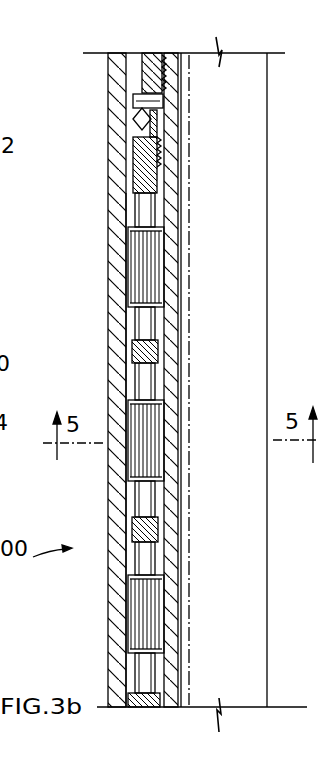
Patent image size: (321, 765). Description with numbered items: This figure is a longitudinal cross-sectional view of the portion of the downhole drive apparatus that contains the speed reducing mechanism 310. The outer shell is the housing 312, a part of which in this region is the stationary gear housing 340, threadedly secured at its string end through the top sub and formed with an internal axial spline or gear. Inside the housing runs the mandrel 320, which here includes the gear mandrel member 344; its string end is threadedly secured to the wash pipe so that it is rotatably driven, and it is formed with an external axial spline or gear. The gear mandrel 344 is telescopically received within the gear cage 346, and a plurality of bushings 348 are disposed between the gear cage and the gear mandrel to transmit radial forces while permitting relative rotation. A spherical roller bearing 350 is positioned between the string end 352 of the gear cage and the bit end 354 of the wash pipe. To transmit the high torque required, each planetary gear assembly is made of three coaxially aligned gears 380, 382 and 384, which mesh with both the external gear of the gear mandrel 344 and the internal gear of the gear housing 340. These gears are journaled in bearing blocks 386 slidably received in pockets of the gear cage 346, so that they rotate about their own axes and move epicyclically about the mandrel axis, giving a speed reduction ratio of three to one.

The speed reducing mechanism 310 is at (100, 300).
The housing 312 is at (100, 525).
The mandrel 320 is at (190, 505).
The stationary gear housing 340 is at (127, 343).
The gear mandrel member 344 is at (176, 320).
The gear cage 346 is at (173, 697).
The bushings 348 is at (160, 158).
The spherical roller bearing 350 is at (165, 114).
The string end of the gear cage 352 is at (162, 130).
The bit end of wash pipe 354 is at (165, 103).
The gear 380 is at (143, 602).
The gear 382 is at (147, 457).
The gear 384 is at (147, 283).
The bearing blocks 386 is at (145, 175).